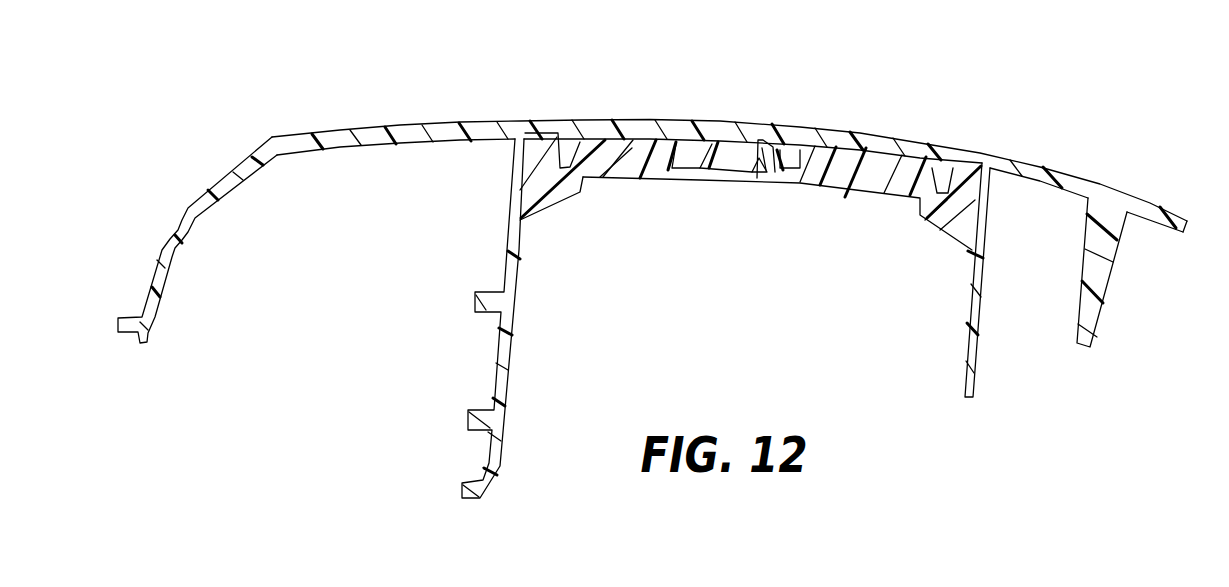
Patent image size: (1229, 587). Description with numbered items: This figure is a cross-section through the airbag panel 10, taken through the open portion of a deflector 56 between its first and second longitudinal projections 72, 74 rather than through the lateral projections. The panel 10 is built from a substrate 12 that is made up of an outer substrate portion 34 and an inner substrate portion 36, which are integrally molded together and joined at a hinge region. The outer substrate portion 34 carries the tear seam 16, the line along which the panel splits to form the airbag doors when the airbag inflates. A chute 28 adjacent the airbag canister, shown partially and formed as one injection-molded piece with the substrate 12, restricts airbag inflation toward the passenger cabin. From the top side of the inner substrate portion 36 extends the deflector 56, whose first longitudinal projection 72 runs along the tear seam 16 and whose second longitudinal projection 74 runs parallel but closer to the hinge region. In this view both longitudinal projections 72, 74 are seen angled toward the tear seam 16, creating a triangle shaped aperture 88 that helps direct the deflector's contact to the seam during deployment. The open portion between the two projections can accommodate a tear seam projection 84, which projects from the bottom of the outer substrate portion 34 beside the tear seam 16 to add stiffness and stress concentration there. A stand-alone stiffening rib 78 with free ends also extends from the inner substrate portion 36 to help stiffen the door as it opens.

The panel 10 is at (1055, 93).
The substrate 12 is at (1065, 173).
The tear seam 16 is at (773, 150).
The chute 28 is at (980, 318).
The outer substrate portion 34 is at (882, 140).
The inner substrate portion 36 is at (848, 193).
The deflector 56 is at (658, 178).
The first longitudinal projection 72 is at (750, 150).
The second longitudinal projection 74 is at (712, 165).
The stiffening rib 78 is at (650, 148).
The tear seam projection 84 is at (795, 150).
The triangle shaped aperture 88 is at (760, 170).